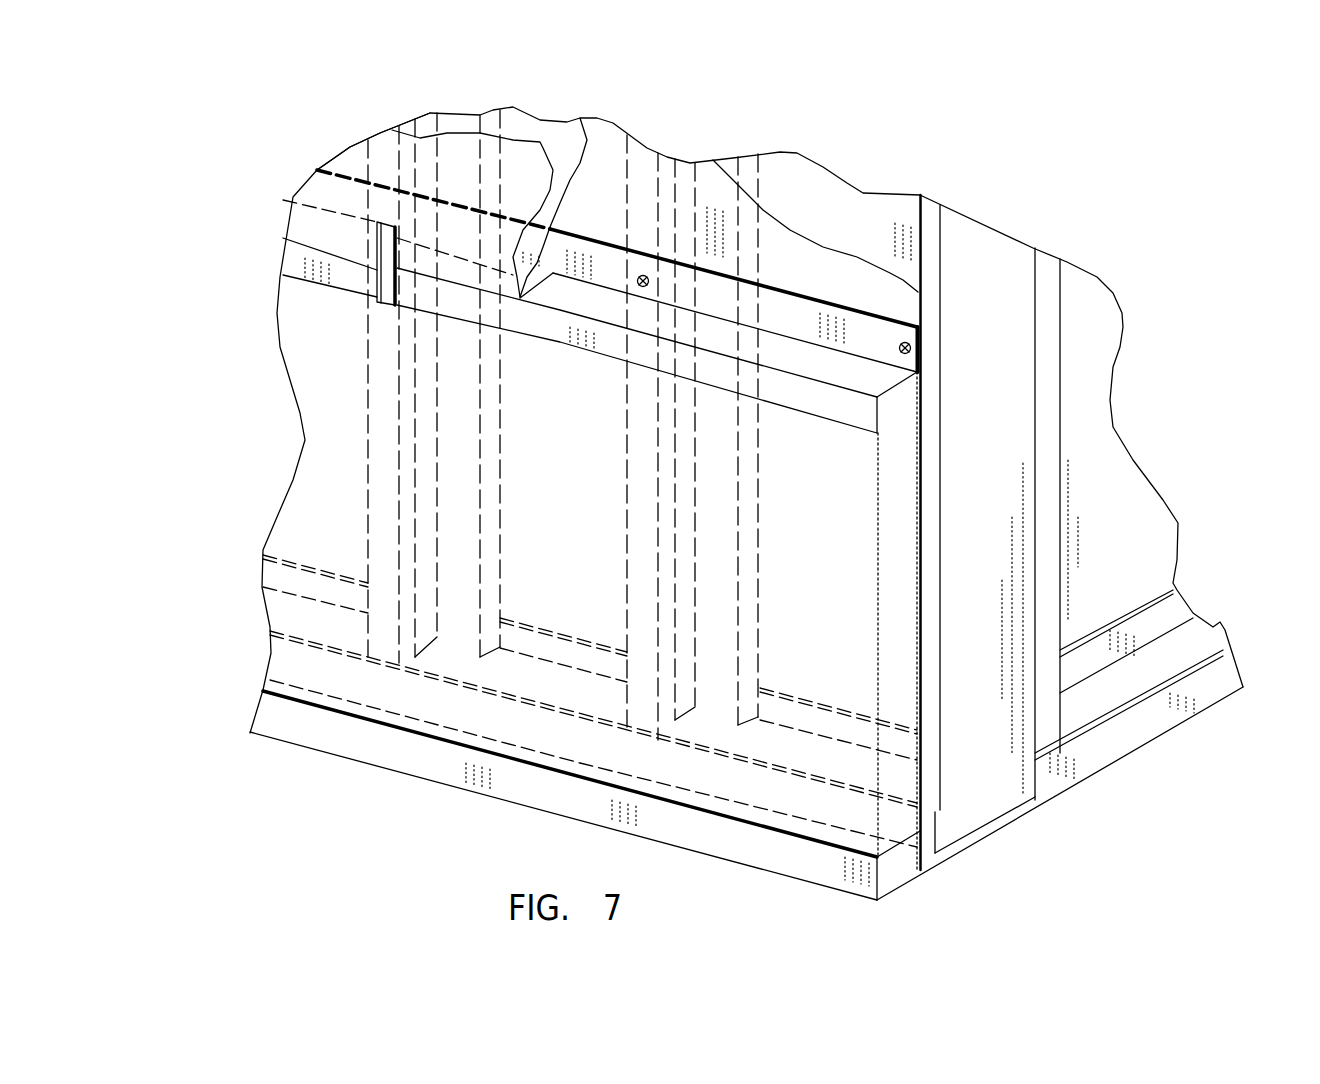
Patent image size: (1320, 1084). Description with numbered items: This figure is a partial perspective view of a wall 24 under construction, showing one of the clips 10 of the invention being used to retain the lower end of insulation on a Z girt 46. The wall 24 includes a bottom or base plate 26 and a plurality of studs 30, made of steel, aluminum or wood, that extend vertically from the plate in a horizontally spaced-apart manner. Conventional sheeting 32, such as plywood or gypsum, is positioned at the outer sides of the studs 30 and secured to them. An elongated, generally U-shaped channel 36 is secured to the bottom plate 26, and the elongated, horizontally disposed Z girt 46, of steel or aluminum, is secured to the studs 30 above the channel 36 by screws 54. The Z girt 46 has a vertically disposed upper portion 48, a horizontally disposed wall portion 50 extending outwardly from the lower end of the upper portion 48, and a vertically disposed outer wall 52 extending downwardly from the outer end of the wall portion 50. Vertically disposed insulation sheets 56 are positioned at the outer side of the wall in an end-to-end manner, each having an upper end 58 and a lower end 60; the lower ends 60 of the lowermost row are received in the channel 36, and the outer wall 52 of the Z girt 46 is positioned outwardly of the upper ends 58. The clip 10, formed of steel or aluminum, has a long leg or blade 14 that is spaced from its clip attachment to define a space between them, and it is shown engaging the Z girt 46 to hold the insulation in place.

The clip 10 is at (373, 274).
The long leg or blade 14 is at (383, 240).
The wall 24 is at (853, 200).
The bottom or base plate 26 is at (1153, 708).
The studs 30 is at (708, 182).
The sheeting 32 is at (930, 217).
The U-shaped channel 36 is at (863, 887).
The Z girt 46 is at (857, 327).
The upper portion 48 is at (885, 342).
The wall portion 50 is at (880, 383).
The outer wall 52 is at (880, 424).
The screws 54 is at (648, 276).
The insulation sheets 56 is at (905, 633).
The upper end 58 is at (883, 400).
The lower end 60 is at (900, 870).